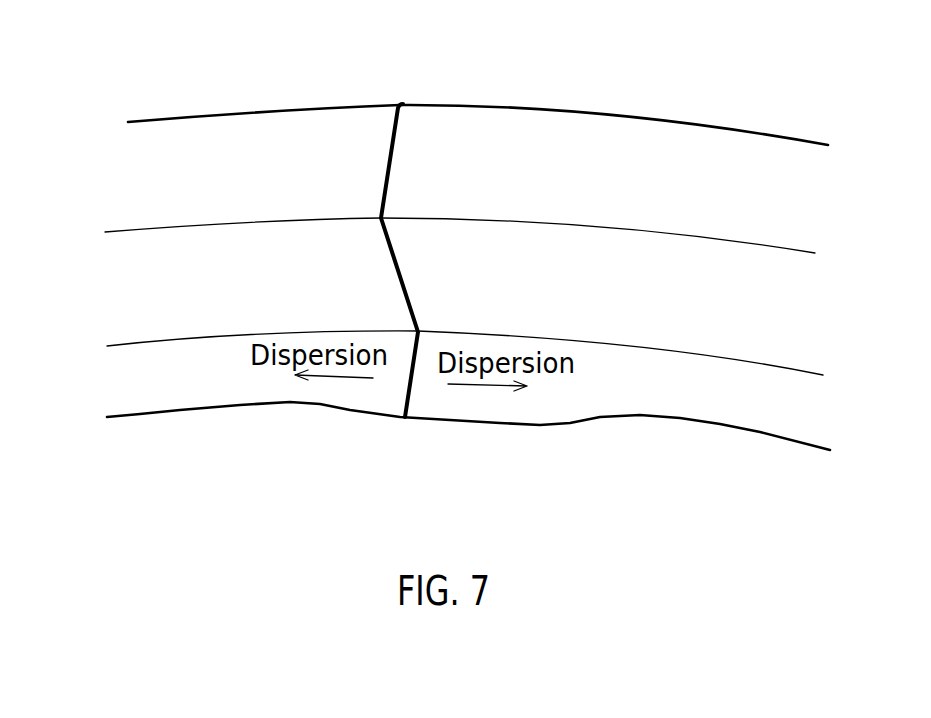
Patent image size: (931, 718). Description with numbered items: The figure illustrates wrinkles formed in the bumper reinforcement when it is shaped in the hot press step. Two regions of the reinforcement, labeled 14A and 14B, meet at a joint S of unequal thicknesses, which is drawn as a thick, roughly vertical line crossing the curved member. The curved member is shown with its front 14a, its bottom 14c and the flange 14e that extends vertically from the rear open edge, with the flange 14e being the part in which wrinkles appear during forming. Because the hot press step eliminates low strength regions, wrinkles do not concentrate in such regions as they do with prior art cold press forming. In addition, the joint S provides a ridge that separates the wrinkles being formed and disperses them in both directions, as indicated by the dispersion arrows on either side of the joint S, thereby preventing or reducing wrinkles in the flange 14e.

The first portion of member 14 14A is at (213, 138).
The second portion of member 14 14B is at (609, 137).
The front 14a is at (155, 172).
The bottom 14c is at (155, 293).
The flange 14e is at (183, 387).
The joint of unequal thicknesses S is at (388, 148).